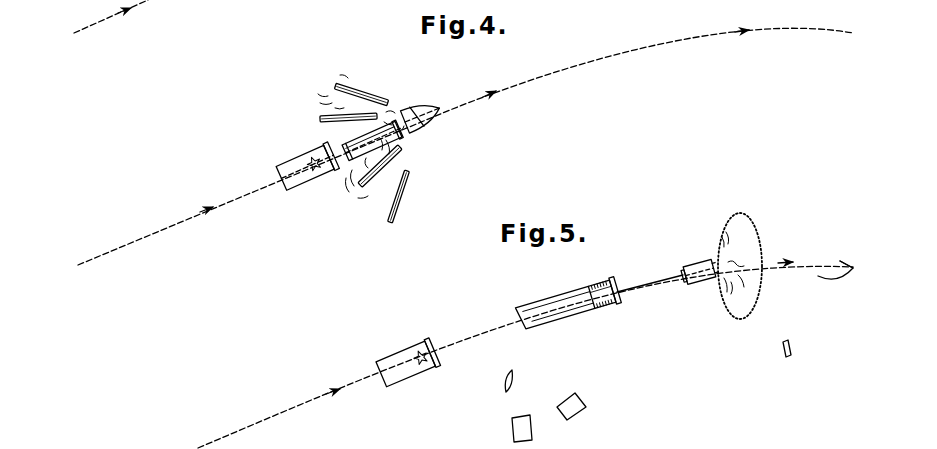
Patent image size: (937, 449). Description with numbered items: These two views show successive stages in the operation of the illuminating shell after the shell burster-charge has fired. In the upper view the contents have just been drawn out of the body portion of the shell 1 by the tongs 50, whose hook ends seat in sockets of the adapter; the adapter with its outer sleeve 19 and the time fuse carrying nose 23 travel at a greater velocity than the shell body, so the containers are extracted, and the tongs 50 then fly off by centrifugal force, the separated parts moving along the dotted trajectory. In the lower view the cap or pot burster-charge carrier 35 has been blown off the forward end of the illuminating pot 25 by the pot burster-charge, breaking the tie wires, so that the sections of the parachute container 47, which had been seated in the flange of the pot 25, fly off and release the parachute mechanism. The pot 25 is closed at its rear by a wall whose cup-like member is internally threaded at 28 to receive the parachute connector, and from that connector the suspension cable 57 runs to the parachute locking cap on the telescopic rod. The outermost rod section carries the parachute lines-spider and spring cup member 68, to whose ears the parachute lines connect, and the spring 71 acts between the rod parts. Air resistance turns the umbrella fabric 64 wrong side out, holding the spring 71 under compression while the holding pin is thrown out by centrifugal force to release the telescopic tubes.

In FIG. 4, the body portion of the shell 1 is at (290, 181).
In FIG. 5, the body portion of the shell 1 is at (389, 356).
In FIG. 4, the tongs 50 is at (357, 113).
In FIG. 4, the time fuse carrying nose 23 is at (424, 113).
In FIG. 4, the outer sleeve or shell of the adapter 19 is at (418, 131).
In FIG. 5, the outer sleeve or shell of the adapter 19 is at (818, 258).
In FIG. 5, the umbrella fabric 64 is at (563, 314).
In FIG. 5, the spring 71 is at (603, 285).
In FIG. 5, the parachute lines-spider and spring cup member 68 is at (619, 297).
In FIG. 5, the suspension cable 57 is at (655, 284).
In FIG. 5, the illuminating pot 25 is at (694, 264).
In FIG. 5, the internal threads of the cup-like member 28 is at (845, 279).
In FIG. 5, the cap or pot burster-charge carrier 35 is at (792, 350).
In FIG. 5, the parachute container 47 is at (562, 423).